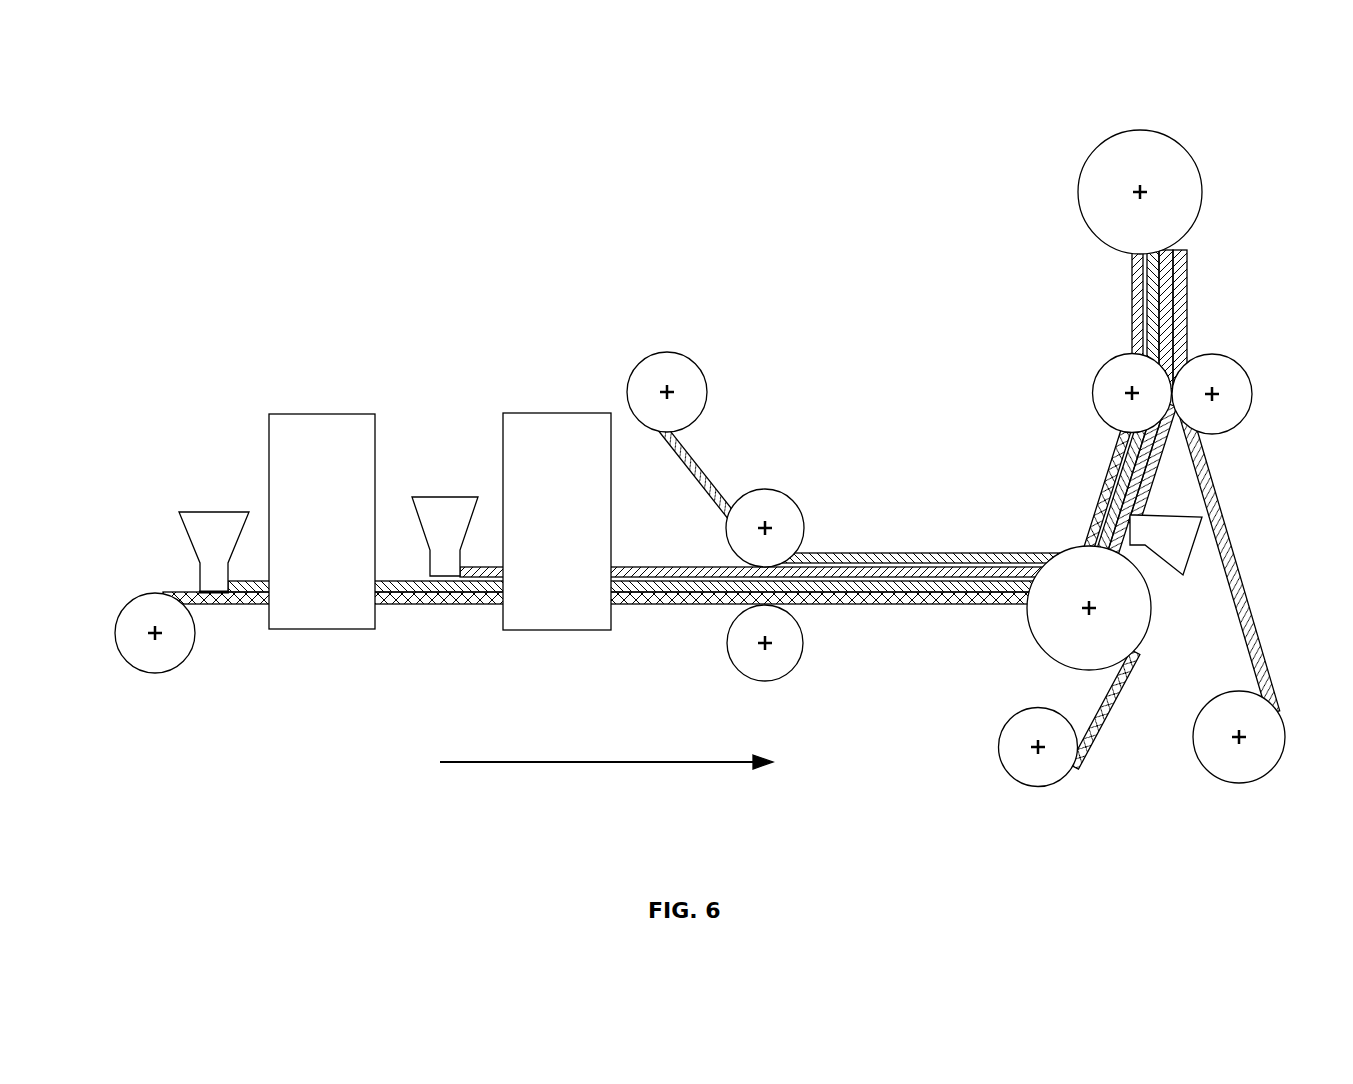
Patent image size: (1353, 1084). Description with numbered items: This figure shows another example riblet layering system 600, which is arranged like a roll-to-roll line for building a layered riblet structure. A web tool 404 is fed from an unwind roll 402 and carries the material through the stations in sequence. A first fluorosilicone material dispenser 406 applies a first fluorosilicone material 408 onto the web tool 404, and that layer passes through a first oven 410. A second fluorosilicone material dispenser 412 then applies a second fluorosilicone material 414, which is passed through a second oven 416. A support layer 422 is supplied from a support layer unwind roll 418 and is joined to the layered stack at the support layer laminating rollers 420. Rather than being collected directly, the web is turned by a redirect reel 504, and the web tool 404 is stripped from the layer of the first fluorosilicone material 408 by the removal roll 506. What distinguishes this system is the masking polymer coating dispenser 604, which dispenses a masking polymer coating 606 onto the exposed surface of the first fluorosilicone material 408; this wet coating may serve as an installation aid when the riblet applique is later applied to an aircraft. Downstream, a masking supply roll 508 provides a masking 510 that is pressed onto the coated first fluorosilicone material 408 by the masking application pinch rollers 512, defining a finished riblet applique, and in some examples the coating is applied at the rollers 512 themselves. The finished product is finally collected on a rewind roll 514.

The riblet layering system 600 is at (380, 200).
The unwind roll 402 is at (140, 593).
The web tool 404 is at (242, 607).
The first fluorosilicone material dispenser 406 is at (212, 512).
The first fluorosilicone material 408 is at (262, 580).
The first oven 410 is at (320, 413).
The second fluorosilicone material dispenser 412 is at (445, 497).
The second fluorosilicone material 414 is at (490, 573).
The second oven 416 is at (557, 412).
The support layer unwind roll 418 is at (662, 352).
The support layer laminating rollers 420 is at (777, 487).
The support layer 422 is at (693, 490).
The redirect reel 504 is at (1067, 548).
The removal roll 506 is at (1000, 742).
The masking supply roll 508 is at (1202, 768).
The masking 510 is at (1248, 600).
The masking application pinch rollers 512 is at (1113, 353).
The rewind roll 514 is at (1097, 147).
The masking polymer coating dispenser 604 is at (1190, 517).
The masking polymer coating 606 is at (1157, 459).